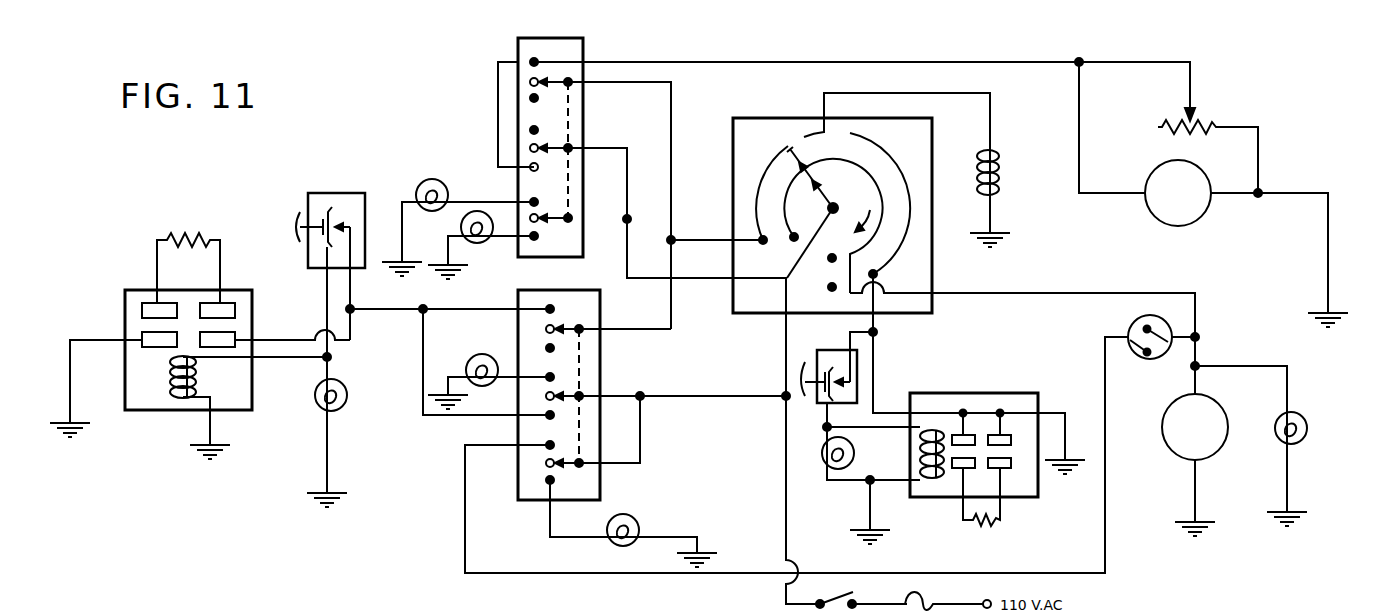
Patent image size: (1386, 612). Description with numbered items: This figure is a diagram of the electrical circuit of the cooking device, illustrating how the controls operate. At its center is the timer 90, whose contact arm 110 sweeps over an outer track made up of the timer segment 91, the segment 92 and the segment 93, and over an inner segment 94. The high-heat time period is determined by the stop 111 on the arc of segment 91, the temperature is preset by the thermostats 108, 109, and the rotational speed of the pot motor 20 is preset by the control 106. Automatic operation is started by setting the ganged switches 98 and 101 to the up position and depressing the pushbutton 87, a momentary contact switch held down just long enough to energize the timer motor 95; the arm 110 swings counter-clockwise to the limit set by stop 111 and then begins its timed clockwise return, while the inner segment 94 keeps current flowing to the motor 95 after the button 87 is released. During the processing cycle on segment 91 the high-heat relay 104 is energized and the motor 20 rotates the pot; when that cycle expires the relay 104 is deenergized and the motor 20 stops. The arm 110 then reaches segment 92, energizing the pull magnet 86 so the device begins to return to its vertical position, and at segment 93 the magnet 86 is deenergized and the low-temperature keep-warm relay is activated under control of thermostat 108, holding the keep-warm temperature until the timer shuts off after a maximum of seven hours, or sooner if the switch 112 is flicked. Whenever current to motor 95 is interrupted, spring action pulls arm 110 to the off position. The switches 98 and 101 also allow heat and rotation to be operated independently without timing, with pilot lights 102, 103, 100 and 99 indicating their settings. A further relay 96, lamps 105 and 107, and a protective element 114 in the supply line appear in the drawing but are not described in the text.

The motor 20 is at (1150, 170).
The pull magnet 86 is at (1002, 178).
The pushbutton 87 is at (1128, 330).
The timer 90 is at (844, 202).
The timer segment 91 is at (772, 160).
The timer segment 92 is at (812, 132).
The timer segment 93 is at (890, 153).
The inner segment 94 is at (878, 209).
The timer motor 95 is at (1168, 440).
The relay 96 is at (1030, 389).
The ganged switch 98 is at (606, 311).
The pilot light 99 is at (632, 516).
The pilot light 100 is at (487, 355).
The ganged switch 101 is at (512, 47).
The pilot light 102 is at (437, 179).
The pilot light 103 is at (477, 243).
The high-heat relay 104 is at (162, 414).
The indicator lamp 105 is at (824, 468).
The control 106 is at (1200, 115).
The indicator lamp 107 is at (1305, 418).
The thermostat 108 is at (830, 350).
The thermostat 109 is at (345, 193).
The timer contact arm 110 is at (347, 404).
The stop 111 is at (750, 207).
The switch 112 is at (840, 595).
The fuse 114 is at (925, 603).